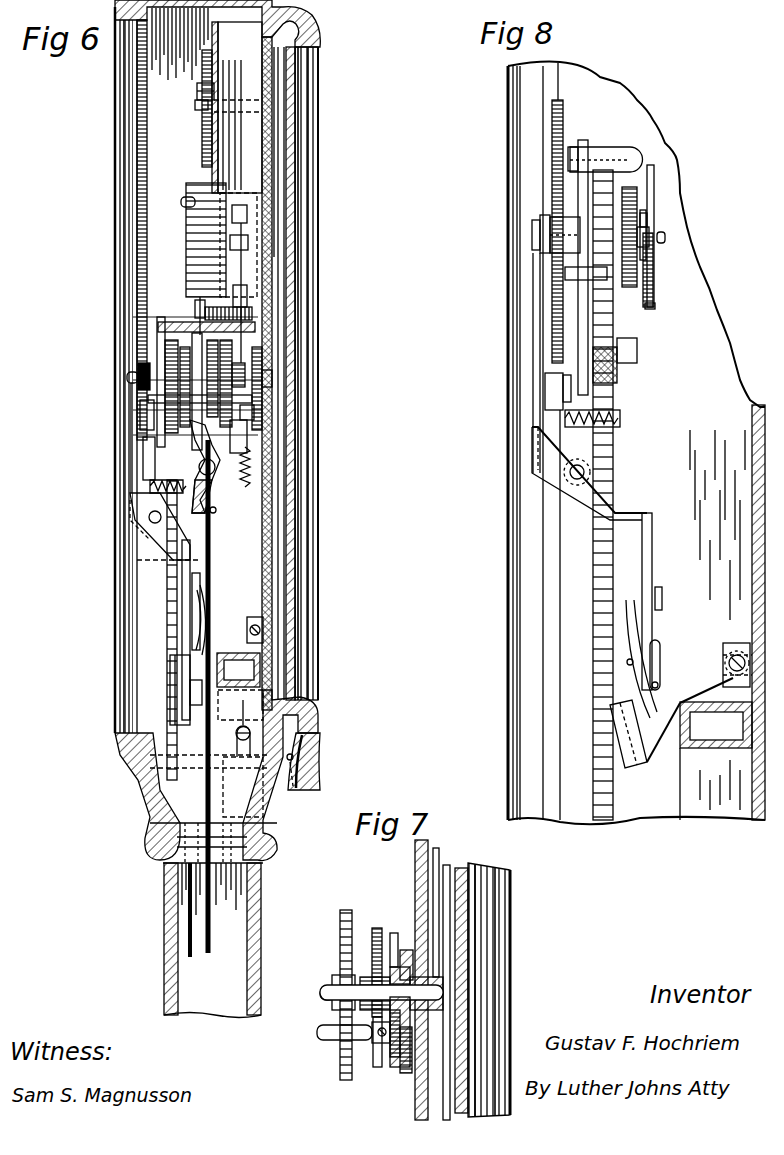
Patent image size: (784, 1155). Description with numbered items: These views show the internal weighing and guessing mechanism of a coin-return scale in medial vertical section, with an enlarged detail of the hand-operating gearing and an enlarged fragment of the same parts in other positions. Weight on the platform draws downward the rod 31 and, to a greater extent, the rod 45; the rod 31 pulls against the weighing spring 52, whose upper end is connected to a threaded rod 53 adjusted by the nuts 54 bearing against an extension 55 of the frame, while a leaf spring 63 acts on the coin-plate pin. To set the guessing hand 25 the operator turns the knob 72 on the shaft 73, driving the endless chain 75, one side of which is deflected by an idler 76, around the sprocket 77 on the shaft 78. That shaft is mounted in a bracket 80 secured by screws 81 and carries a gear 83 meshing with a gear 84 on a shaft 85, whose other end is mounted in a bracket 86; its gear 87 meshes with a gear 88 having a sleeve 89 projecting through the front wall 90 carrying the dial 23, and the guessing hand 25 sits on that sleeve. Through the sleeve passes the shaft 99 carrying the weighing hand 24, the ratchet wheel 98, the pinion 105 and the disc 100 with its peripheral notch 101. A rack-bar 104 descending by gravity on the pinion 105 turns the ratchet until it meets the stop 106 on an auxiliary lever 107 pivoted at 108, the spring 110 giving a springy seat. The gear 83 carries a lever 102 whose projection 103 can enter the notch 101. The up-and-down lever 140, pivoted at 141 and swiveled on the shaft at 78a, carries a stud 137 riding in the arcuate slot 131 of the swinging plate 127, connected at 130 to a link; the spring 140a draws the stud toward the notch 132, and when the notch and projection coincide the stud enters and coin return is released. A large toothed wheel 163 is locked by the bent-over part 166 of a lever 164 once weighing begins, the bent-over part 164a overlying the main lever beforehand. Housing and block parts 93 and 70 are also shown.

In FIG. 7, the dial 23 is at (438, 850).
In FIG. 6, the weighing hand 24 is at (281, 308).
In FIG. 7, the weighing hand 24 is at (452, 890).
In FIG. 6, the guessing hand 25 is at (280, 223).
In FIG. 7, the guessing hand 25 is at (446, 922).
In FIG. 6, the rod 31 is at (200, 576).
In FIG. 6, the vertically disposed rod 45 is at (190, 903).
In FIG. 6, the weighing spring 52 is at (186, 230).
In FIG. 6, the threaded rod 53 is at (202, 133).
In FIG. 6, the nuts 54 is at (197, 93).
In FIG. 6, the extension of the frame 55 is at (195, 106).
In FIG. 6, the leaf spring 63 is at (215, 782).
In FIG. 6, the block 70 is at (238, 670).
In FIG. 8, the block 70 is at (716, 761).
In FIG. 6, the knob 72 is at (320, 759).
In FIG. 6, the shaft 73 is at (293, 784).
In FIG. 6, the endless chain 75 is at (170, 573).
In FIG. 8, the endless chain 75 is at (613, 446).
In FIG. 8, the idler 76 is at (618, 378).
In FIG. 8, the sprocket 77 is at (605, 190).
In FIG. 8, the shaft 78 is at (650, 232).
In FIG. 8, the swivel 78a is at (532, 230).
In FIG. 6, the bracket 80 is at (180, 332).
In FIG. 8, the bracket 80 is at (590, 150).
In FIG. 6, the screws 81 is at (150, 340).
In FIG. 8, the screws 81 is at (574, 147).
In FIG. 6, the gear 83 is at (200, 318).
In FIG. 8, the gear 83 is at (632, 288).
In FIG. 6, the gear 84 is at (140, 420).
In FIG. 8, the gear 84 is at (560, 276).
In FIG. 6, the shaft 85 is at (148, 398).
In FIG. 7, the shaft 85 is at (328, 1040).
In FIG. 6, the bracket 86 is at (257, 413).
In FIG. 7, the bracket 86 is at (390, 1065).
In FIG. 6, the gear 87 is at (248, 401).
In FIG. 7, the gear 87 is at (404, 1077).
In FIG. 6, the gear 88 is at (263, 365).
In FIG. 7, the gear 88 is at (405, 950).
In FIG. 6, the sleeve 89 is at (274, 378).
In FIG. 7, the sleeve 89 is at (442, 1003).
In FIG. 6, the front wall 90 is at (272, 348).
In FIG. 7, the front wall 90 is at (415, 870).
In FIG. 6, the housing 93 is at (240, 107).
In FIG. 7, the ratchet wheel 98 is at (340, 935).
In FIG. 7, the shaft 99 is at (326, 986).
In FIG. 8, the shaft 99 is at (666, 237).
In FIG. 8, the disc 100 is at (653, 195).
In FIG. 8, the peripheral notch 101 is at (653, 298).
In FIG. 8, the lever 102 is at (648, 220).
In FIG. 8, the projection 103 is at (653, 309).
In FIG. 6, the rack-bar 104 is at (248, 440).
In FIG. 7, the rack-bar 104 is at (375, 928).
In FIG. 8, the rack-bar 104 is at (648, 245).
In FIG. 7, the pinion 105 is at (362, 1008).
In FIG. 6, the stop 106 is at (170, 666).
In FIG. 8, the stop 106 is at (640, 768).
In FIG. 6, the auxiliary lever 107 is at (108, 691).
In FIG. 6, the pivot 108 is at (163, 785).
In FIG. 6, the spring 110 is at (252, 470).
In FIG. 6, the swinging plate 127 is at (247, 626).
In FIG. 8, the swinging plate 127 is at (713, 665).
In FIG. 6, the connection 130 is at (180, 620).
In FIG. 8, the arcuate slot 131 is at (648, 708).
In FIG. 8, the notch 132 is at (627, 662).
In FIG. 6, the stud 137 is at (180, 645).
In FIG. 8, the stud 137 is at (655, 650).
In FIG. 6, the up-and-down lever 140 is at (170, 530).
In FIG. 8, the up-and-down lever 140 is at (533, 340).
In FIG. 6, the spring 140a is at (150, 490).
In FIG. 8, the spring 140a is at (620, 419).
In FIG. 6, the pivot 141 is at (226, 513).
In FIG. 6, the wheel 163 is at (137, 298).
In FIG. 8, the wheel 163 is at (552, 140).
In FIG. 8, the lever 164 is at (572, 388).
In FIG. 8, the bent-over part of lever 164a is at (638, 352).
In FIG. 6, the bent-over part 166 is at (150, 466).
In FIG. 8, the bent-over part 166 is at (545, 388).